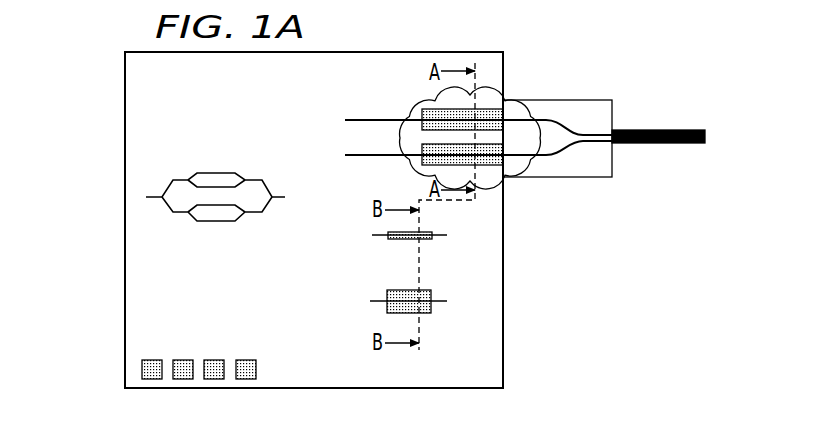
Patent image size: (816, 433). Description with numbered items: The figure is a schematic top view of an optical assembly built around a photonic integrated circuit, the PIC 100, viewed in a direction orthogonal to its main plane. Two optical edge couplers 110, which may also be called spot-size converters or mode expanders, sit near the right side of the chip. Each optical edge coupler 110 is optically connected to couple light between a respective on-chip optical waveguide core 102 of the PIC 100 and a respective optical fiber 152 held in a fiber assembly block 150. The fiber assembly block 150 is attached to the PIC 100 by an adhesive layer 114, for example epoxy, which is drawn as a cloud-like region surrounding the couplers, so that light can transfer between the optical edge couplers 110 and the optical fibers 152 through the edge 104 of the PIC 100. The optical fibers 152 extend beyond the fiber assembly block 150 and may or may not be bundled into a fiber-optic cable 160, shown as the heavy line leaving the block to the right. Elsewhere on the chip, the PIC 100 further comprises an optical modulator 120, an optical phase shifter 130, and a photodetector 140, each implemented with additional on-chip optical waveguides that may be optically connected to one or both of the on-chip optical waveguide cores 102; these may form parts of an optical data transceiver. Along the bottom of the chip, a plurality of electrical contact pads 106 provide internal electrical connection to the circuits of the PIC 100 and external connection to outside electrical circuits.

The PIC 100 is at (125, 71).
The on-chip optical waveguide core 102 is at (347, 155).
The edge 104 is at (505, 318).
The electrical contact pad 106 is at (265, 370).
The optical edge coupler 110 is at (428, 157).
The adhesive layer 114 is at (485, 180).
The optical modulator 120 is at (213, 221).
The optical phase shifter 130 is at (396, 239).
The photodetector 140 is at (385, 293).
The fiber assembly block 150 is at (612, 117).
The optical fiber 152 is at (548, 121).
The fiber-optic cable 160 is at (650, 143).